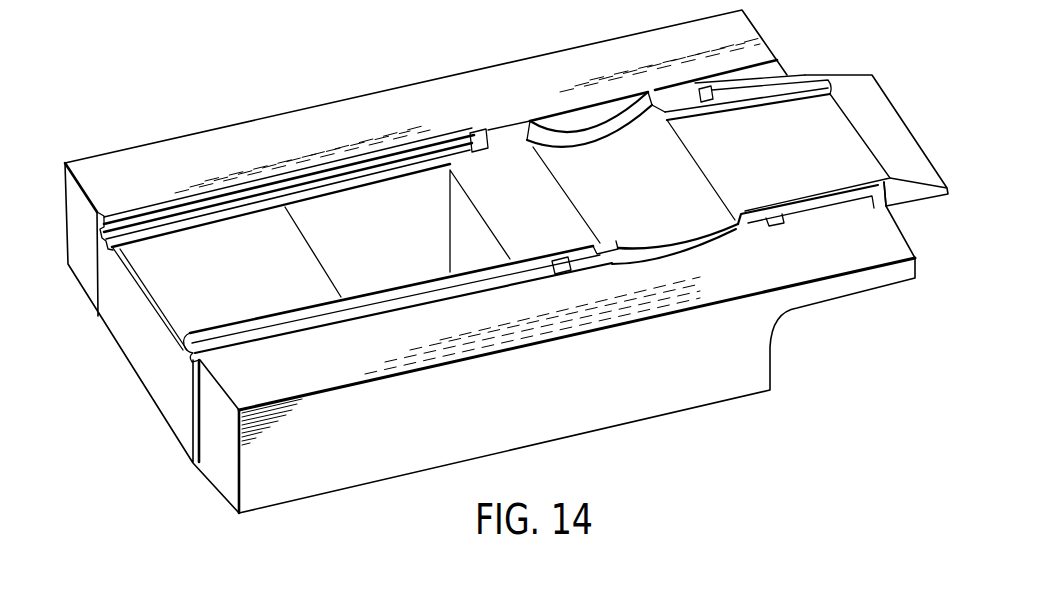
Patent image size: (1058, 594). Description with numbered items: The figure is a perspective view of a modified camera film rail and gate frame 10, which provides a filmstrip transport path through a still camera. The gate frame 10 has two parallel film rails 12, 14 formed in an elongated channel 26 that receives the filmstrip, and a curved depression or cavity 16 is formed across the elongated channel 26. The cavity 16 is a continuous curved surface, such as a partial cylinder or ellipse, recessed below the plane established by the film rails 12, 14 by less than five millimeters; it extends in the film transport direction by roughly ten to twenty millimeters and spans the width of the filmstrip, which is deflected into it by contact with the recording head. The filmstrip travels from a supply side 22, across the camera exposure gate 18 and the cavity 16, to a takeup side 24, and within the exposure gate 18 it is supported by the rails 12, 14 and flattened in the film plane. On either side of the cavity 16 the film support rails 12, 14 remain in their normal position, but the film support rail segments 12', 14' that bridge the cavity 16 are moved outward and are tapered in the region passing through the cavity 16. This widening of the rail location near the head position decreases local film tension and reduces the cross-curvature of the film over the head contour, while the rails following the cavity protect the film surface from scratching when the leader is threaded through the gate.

The camera film rail and gate frame 10 is at (640, 414).
The film rail 12 is at (464, 155).
The film support rail segment 12' is at (585, 94).
The film rail 14 is at (531, 282).
The film support rail segment 14' is at (703, 252).
The cavity 16 is at (678, 175).
The camera exposure gate 18 is at (410, 193).
The supply side 22 is at (260, 278).
The takeup side 24 is at (805, 168).
The elongated channel 26 is at (899, 102).